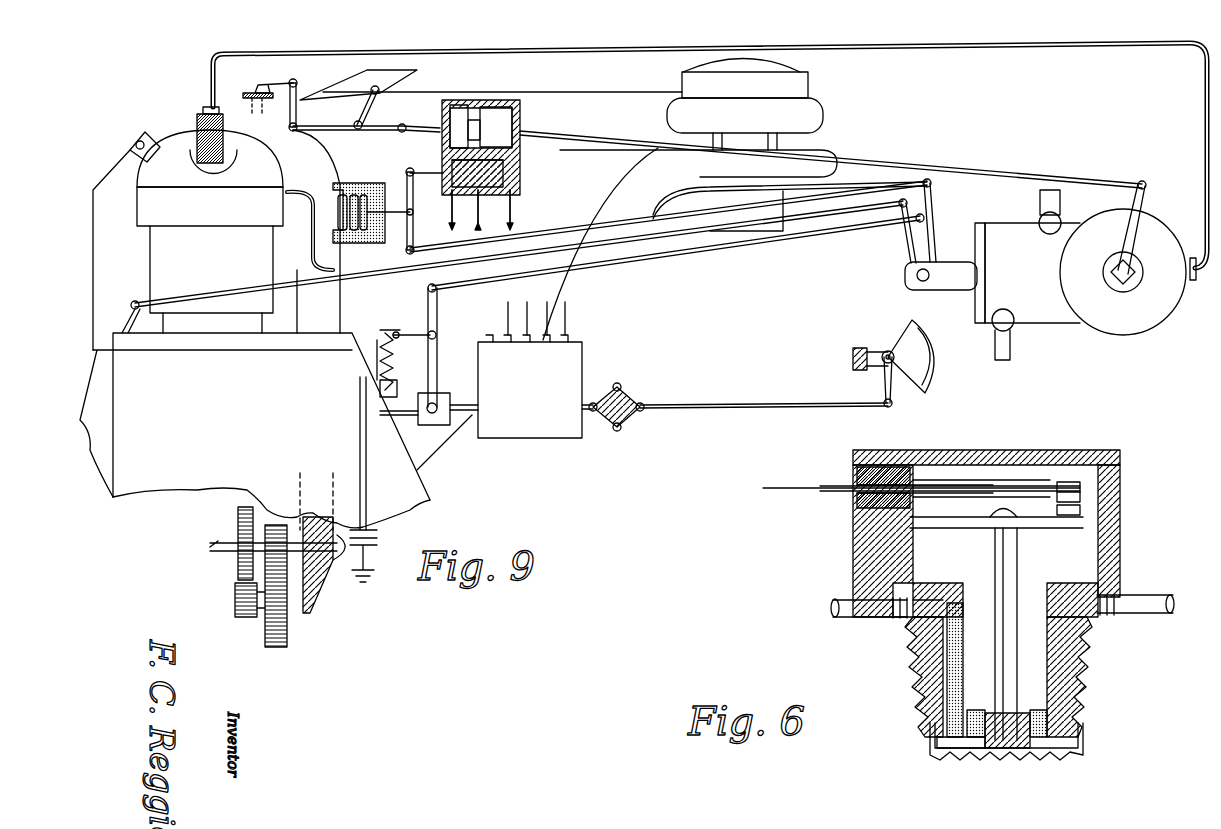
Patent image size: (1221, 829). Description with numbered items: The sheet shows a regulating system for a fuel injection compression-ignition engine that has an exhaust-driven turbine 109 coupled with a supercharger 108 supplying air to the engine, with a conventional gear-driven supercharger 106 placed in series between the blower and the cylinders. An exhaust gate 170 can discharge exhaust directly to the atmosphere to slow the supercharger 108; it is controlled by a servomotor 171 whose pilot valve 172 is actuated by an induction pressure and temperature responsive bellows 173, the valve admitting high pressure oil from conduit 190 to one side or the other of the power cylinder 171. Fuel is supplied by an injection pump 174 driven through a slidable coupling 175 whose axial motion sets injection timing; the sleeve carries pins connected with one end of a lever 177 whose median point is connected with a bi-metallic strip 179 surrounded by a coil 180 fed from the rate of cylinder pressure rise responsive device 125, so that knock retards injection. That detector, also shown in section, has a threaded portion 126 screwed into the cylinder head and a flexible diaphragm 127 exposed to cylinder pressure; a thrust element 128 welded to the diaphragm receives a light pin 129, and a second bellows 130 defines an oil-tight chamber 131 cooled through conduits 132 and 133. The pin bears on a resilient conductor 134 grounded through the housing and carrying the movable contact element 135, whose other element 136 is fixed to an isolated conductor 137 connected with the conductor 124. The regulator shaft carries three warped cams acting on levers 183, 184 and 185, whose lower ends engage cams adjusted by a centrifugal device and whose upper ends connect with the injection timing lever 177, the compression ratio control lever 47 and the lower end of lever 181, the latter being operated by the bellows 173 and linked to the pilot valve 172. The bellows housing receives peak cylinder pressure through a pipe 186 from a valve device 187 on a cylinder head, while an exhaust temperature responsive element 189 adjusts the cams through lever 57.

In FIG. 9, the compression ratio control lever 47 is at (130, 305).
In FIG. 9, the lever 57 is at (1150, 200).
In FIG. 9, the gear-driven supercharger 106 is at (322, 585).
In FIG. 9, the supercharger 108 is at (830, 150).
In FIG. 9, the exhaust-driven turbine 109 is at (822, 112).
In FIG. 6, the conductor 124 is at (808, 492).
In FIG. 9, the detonation detector 125 is at (147, 128).
In FIG. 6, the detonation detector 125 is at (1120, 505).
In FIG. 6, the threaded portion 126 is at (915, 683).
In FIG. 6, the flexible diaphragm 127 is at (1043, 758).
In FIG. 6, the thrust element 128 is at (1000, 748).
In FIG. 6, the pin 129 is at (998, 560).
In FIG. 6, the second flexible diaphragm or bellows 130 is at (1047, 712).
In FIG. 6, the chamber 131 is at (945, 745).
In FIG. 6, the conduit 132 is at (950, 648).
In FIG. 6, the conduit 133 is at (1070, 640).
In FIG. 6, the resilient conductor 134 is at (1020, 525).
In FIG. 6, the movable element of electric contact 135 is at (1075, 512).
In FIG. 6, the contact element 136 is at (1092, 445).
In FIG. 6, the conductor 137 is at (953, 487).
In FIG. 9, the gate 170 is at (372, 88).
In FIG. 9, the servomotor 171 is at (480, 105).
In FIG. 9, the pilot valve 172 is at (520, 163).
In FIG. 9, the bellows 173 is at (355, 183).
In FIG. 9, the injection pump 174 is at (562, 440).
In FIG. 9, the slidable coupling 175 is at (430, 428).
In FIG. 9, the lever 177 is at (458, 308).
In FIG. 9, the bi-metallic strip 179 is at (392, 330).
In FIG. 9, the coil 180 is at (378, 350).
In FIG. 9, the lever 181 is at (384, 142).
In FIG. 9, the lever 183 is at (903, 240).
In FIG. 9, the lever 184 is at (905, 270).
In FIG. 9, the lever 185 is at (932, 195).
In FIG. 9, the pipe 186 is at (918, 46).
In FIG. 9, the valve device 187 is at (200, 112).
In FIG. 9, the exhaust temperature responsive element 189 is at (211, 64).
In FIG. 9, the conduit 190 is at (482, 216).